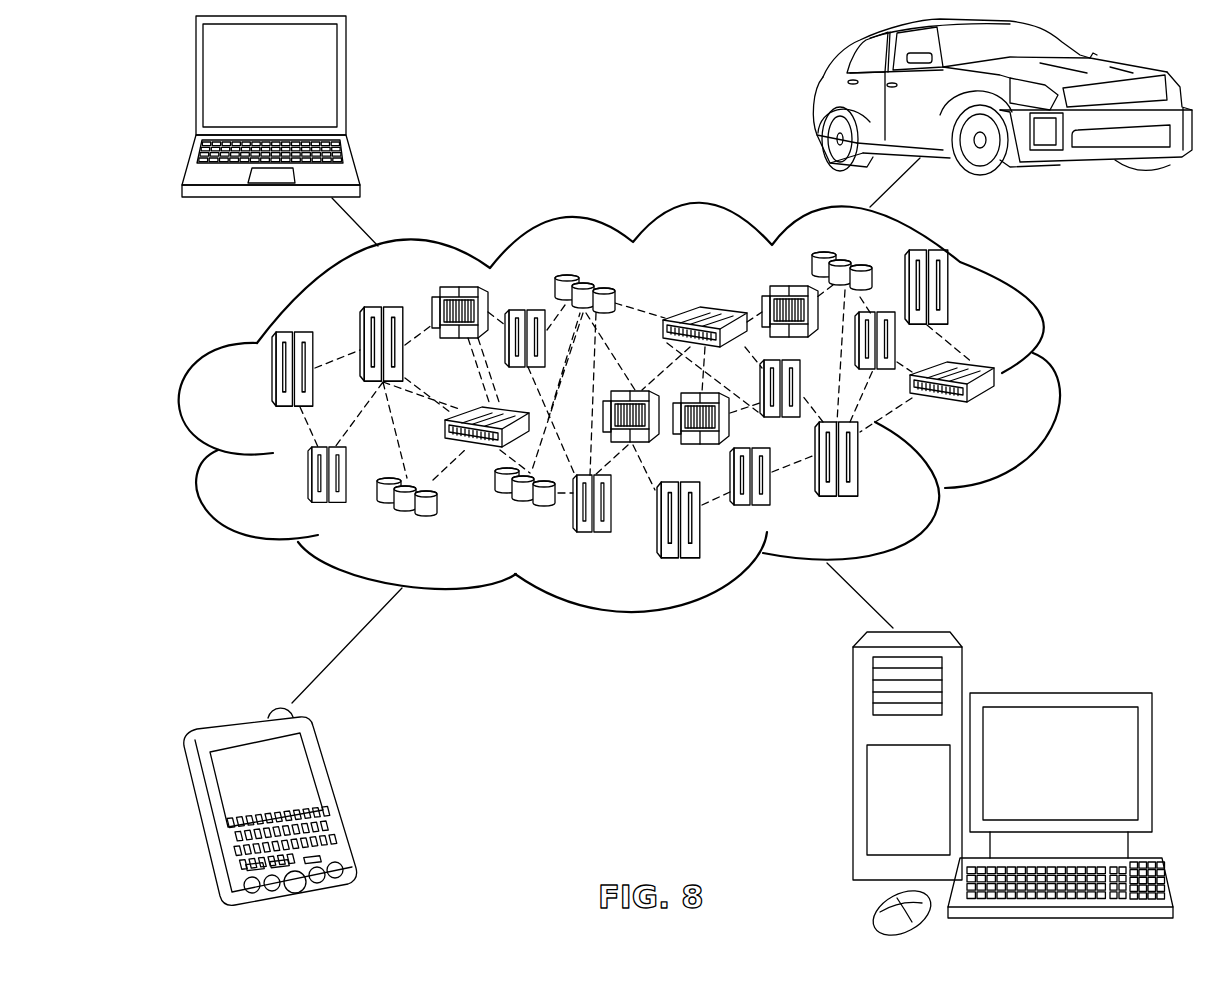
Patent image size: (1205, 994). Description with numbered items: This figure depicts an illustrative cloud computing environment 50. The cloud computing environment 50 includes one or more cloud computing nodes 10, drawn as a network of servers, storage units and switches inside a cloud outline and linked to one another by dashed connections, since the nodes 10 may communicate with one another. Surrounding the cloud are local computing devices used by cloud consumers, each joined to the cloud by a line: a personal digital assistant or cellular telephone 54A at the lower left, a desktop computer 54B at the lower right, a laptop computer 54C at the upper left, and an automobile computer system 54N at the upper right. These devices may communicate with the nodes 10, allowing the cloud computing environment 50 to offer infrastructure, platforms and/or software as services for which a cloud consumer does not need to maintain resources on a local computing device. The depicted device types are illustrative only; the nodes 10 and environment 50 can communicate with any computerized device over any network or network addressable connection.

The cloud computing node 10 is at (994, 412).
The cloud computing environment 50 is at (657, 407).
The personal digital assistant or cellular telephone 54A is at (333, 797).
The desktop computer 54B is at (1057, 692).
The laptop computer 54C is at (347, 83).
The automobile computer system 54N is at (820, 101).